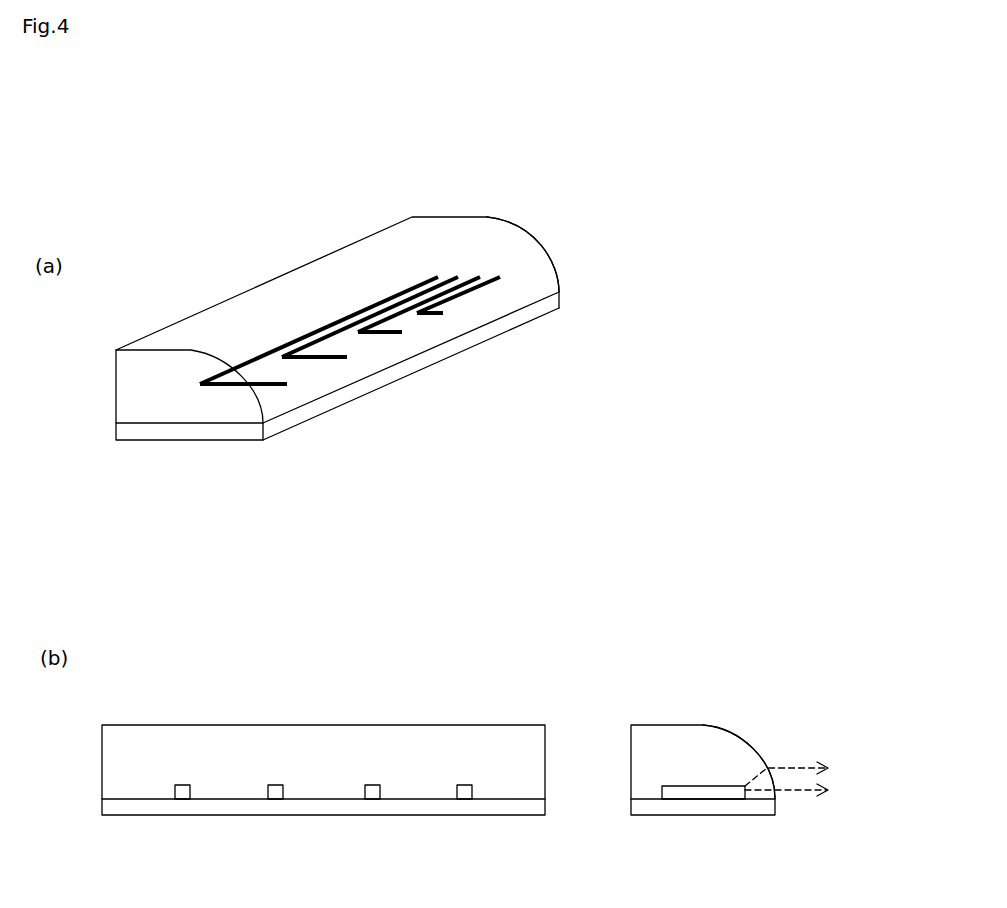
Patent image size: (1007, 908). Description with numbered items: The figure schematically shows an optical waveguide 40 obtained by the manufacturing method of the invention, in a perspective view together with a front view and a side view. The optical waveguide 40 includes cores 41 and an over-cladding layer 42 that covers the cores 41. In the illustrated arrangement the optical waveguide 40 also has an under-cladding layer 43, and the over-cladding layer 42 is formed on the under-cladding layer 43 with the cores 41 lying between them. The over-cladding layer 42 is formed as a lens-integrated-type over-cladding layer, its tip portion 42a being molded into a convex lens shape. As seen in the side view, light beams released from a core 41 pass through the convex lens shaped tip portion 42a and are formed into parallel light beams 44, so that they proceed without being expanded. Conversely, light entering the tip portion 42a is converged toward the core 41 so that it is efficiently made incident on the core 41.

The optical waveguide 40 is at (504, 178).
The cores 41 is at (407, 293).
The over-cladding layer 42 is at (132, 398).
The tip portion 42a is at (520, 262).
The under-cladding layer 43 is at (173, 430).
The parallel light beams 44 is at (836, 752).